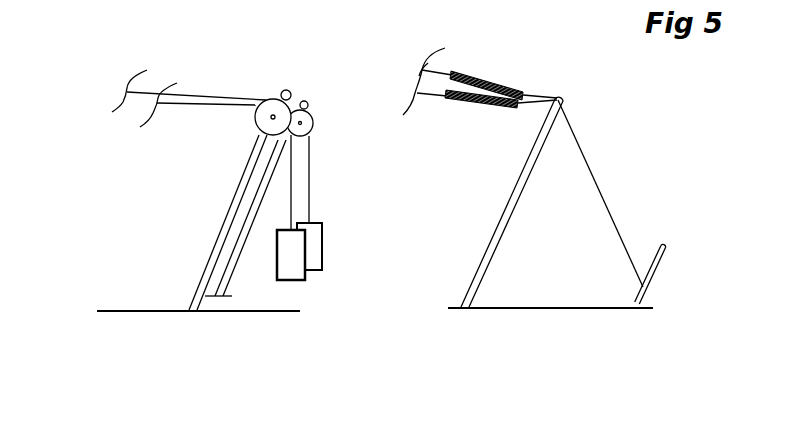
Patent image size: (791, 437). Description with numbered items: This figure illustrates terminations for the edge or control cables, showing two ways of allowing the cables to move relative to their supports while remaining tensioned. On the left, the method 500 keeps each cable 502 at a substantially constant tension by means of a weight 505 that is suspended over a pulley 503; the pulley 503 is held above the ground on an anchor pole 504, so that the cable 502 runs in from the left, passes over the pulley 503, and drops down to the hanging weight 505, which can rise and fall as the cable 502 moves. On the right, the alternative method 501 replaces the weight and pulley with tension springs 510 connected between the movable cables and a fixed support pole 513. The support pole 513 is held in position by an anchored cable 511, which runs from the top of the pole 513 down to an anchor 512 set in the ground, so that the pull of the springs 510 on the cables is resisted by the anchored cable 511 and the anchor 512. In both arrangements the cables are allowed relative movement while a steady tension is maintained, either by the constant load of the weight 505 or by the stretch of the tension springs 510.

The method for allowing relative movement of the edge or control cables 500 is at (198, 160).
The alternative method 501 is at (528, 178).
The cable 502 is at (227, 95).
The pulley 503 is at (257, 130).
The anchor pole 504 is at (208, 253).
The weight 505 is at (315, 252).
The tension springs 510 is at (482, 75).
The anchored cable 511 is at (583, 155).
The anchor 512 is at (661, 250).
The fixed support pole 513 is at (530, 170).